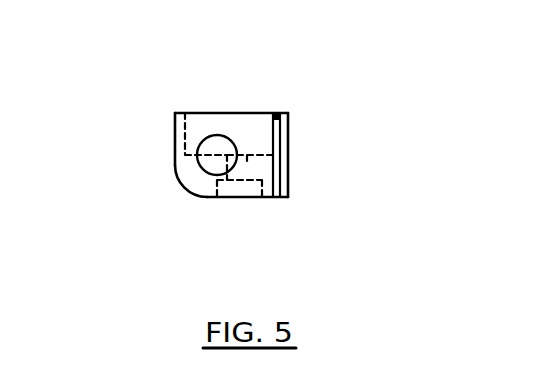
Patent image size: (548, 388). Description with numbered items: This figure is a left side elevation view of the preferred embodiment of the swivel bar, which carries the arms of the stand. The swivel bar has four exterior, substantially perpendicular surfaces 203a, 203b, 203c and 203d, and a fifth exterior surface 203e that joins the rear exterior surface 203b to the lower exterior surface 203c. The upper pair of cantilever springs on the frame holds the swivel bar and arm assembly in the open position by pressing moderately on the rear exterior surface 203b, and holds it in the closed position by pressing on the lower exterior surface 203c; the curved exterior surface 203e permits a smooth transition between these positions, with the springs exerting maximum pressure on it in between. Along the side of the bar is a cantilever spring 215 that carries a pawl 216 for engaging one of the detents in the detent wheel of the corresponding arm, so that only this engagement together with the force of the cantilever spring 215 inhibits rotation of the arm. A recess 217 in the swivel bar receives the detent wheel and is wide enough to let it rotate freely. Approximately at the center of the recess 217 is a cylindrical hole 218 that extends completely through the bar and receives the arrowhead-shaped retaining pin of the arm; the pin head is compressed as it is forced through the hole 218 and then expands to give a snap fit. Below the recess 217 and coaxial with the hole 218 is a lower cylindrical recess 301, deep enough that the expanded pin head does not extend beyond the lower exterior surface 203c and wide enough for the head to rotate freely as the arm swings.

The exterior surface 203a is at (248, 112).
The rear exterior surface 203b is at (173, 143).
The lower exterior surface 203c is at (268, 198).
The exterior surface 203d is at (290, 170).
The curved exterior surface 203e is at (185, 188).
The cantilever spring 215 is at (282, 143).
The pawl 216 is at (277, 117).
The recess 217 is at (203, 120).
The cylindrical hole 218 is at (242, 165).
The cylindrical recess 301 is at (235, 193).